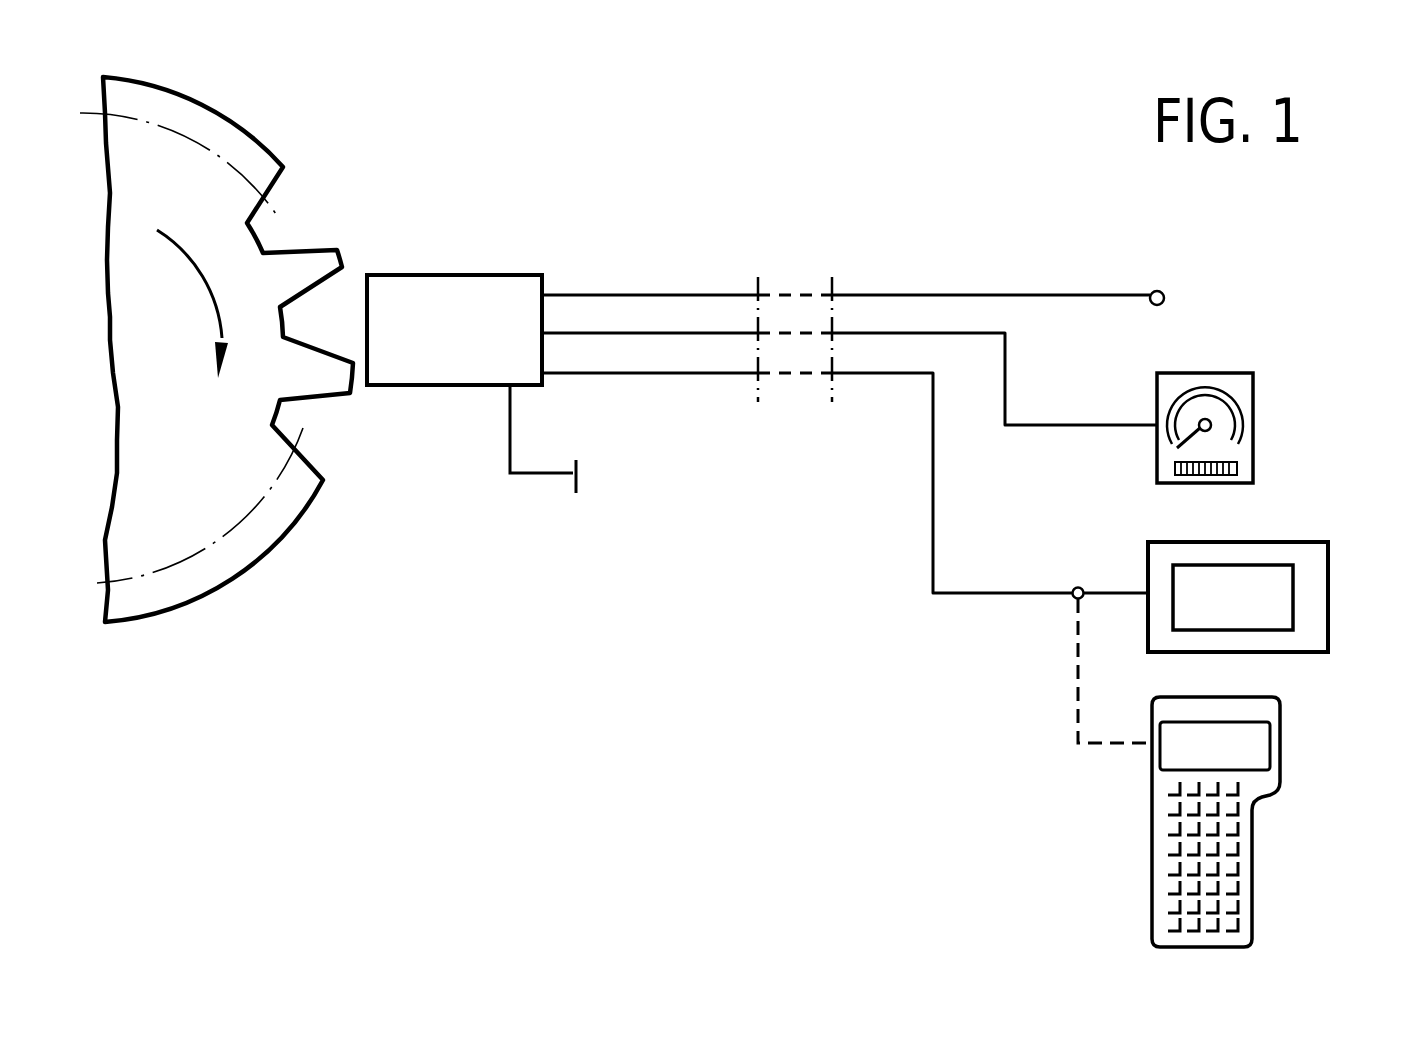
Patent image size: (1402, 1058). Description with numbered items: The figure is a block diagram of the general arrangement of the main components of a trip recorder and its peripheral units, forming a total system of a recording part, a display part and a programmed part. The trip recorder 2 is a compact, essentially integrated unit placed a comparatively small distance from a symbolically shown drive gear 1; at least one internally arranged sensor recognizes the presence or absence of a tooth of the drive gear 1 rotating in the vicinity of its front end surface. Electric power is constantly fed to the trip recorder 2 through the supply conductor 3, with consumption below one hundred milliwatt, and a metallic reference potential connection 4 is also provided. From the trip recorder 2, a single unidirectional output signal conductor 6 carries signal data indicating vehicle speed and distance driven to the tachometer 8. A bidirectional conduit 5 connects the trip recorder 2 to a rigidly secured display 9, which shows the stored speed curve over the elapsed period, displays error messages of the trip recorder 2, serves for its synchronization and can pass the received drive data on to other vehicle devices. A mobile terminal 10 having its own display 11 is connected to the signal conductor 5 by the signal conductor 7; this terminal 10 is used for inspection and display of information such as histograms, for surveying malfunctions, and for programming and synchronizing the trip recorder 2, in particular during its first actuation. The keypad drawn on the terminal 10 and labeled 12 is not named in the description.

The drive gear 1 is at (210, 570).
The trip recorder 2 is at (443, 302).
The supply conductor 3 is at (715, 294).
The metallic reference potential connection 4 is at (537, 473).
The bi-directional input/signal conductor 5 is at (725, 374).
The output signal conductor 6 is at (662, 333).
The signal conductor 7 is at (1075, 683).
The tachometer 8 is at (1245, 385).
The display 9 is at (1312, 577).
The mobile terminal 10 is at (1216, 822).
The display 11 is at (1257, 753).
The keypad 12 is at (1173, 843).